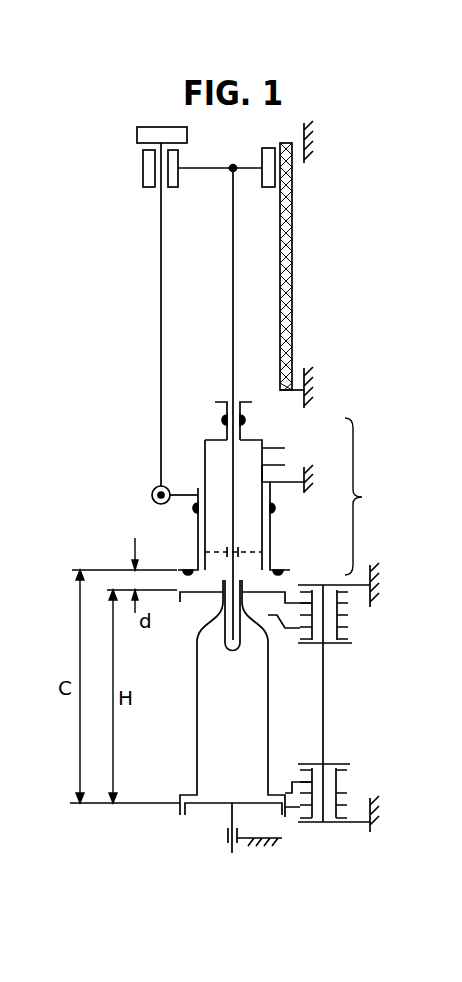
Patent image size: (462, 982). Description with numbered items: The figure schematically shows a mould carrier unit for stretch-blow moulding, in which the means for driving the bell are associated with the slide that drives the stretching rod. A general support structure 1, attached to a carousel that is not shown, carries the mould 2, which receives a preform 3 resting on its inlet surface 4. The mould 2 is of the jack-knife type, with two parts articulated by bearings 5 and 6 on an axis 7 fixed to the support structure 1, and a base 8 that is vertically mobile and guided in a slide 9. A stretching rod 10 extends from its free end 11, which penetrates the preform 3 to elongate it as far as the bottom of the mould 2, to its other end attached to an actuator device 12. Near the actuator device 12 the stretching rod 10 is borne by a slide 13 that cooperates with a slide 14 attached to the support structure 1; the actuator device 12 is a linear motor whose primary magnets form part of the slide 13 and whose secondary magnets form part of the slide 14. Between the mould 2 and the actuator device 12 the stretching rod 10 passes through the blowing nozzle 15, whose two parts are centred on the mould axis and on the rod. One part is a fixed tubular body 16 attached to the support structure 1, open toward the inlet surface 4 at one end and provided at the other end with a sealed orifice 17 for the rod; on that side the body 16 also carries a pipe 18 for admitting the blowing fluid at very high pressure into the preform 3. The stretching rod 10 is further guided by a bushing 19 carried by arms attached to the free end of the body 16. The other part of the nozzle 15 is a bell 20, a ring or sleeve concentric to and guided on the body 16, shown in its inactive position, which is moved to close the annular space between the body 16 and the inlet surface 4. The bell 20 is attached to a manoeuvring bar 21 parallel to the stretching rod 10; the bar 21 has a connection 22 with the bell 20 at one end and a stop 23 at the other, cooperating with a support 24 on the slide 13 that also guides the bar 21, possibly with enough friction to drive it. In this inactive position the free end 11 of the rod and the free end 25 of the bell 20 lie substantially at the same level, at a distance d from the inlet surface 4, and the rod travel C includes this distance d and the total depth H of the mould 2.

The general support structure 1 is at (308, 137).
The mould 2 is at (195, 728).
The preform 3 is at (230, 632).
The inlet surface 4 is at (290, 588).
The bearing 5 is at (342, 608).
The bearing 6 is at (342, 630).
The axis 7 is at (323, 698).
The base 8 is at (202, 806).
The slide 9 is at (228, 838).
The stretching rod 10 is at (233, 235).
The free end 11 is at (232, 570).
The actuator device 12 is at (308, 207).
The slide 13 is at (270, 160).
The slide 14 is at (292, 307).
The blowing nozzle 15 is at (370, 496).
The body 16 is at (205, 465).
The orifice 17 is at (221, 419).
The pipe 18 is at (276, 459).
The bushing 19 is at (240, 550).
The bell 20 is at (198, 552).
The bar 21 is at (161, 248).
The connection 22 is at (152, 492).
The stop 23 is at (150, 131).
The support 24 is at (150, 168).
The free end 25 is at (279, 570).